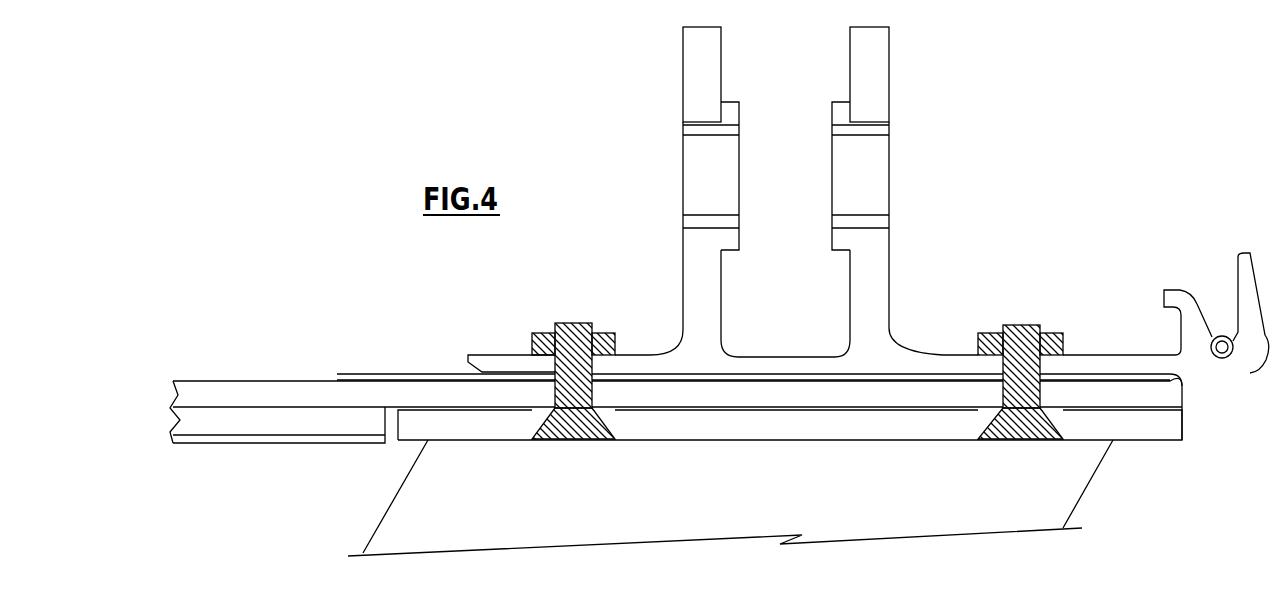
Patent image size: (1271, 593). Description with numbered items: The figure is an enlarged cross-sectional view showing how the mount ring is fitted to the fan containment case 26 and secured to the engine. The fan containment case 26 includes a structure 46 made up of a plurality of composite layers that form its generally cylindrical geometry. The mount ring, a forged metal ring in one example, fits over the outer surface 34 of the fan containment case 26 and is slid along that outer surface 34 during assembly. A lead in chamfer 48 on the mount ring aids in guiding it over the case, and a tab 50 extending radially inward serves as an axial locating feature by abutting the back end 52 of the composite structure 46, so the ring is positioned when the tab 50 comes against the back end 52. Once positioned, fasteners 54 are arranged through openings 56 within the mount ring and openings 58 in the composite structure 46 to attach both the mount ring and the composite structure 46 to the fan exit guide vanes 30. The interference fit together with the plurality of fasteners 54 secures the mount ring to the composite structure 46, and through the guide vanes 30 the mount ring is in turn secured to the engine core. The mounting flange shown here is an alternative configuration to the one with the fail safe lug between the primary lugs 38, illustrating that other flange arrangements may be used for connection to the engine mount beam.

The fan containment case 26 is at (312, 305).
The fan exit guide vanes 30 is at (790, 481).
The outer surface 34 is at (316, 379).
The primary lugs 38 is at (878, 55).
The composite structure 46 is at (206, 395).
The lead in chamfer 48 is at (482, 372).
The tab 50 is at (1192, 393).
The back end 52 is at (1190, 400).
The fasteners 54 is at (605, 367).
The openings 56 is at (561, 365).
The openings 58 is at (562, 395).